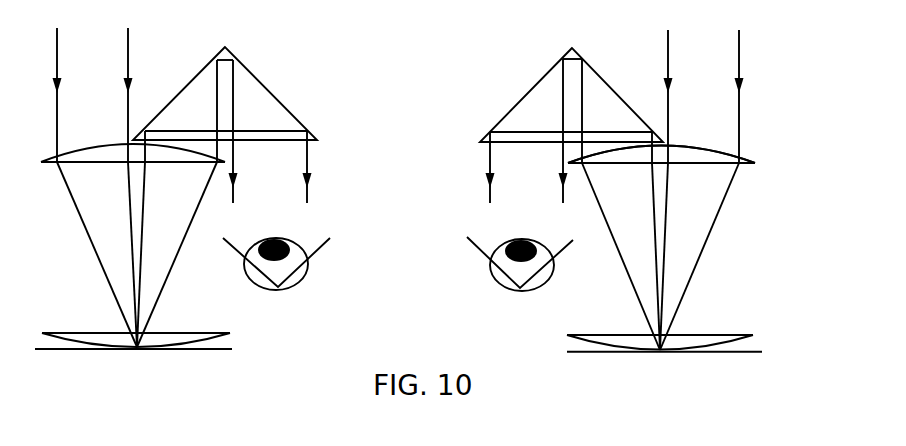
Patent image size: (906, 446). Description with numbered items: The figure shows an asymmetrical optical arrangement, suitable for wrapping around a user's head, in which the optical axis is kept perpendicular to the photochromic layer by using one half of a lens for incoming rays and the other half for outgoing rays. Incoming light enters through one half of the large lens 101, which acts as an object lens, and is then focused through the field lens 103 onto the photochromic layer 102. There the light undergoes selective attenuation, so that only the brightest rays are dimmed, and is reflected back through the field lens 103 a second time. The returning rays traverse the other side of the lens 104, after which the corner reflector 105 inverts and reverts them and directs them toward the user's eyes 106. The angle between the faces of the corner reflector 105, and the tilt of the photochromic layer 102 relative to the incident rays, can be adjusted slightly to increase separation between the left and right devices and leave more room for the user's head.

The large lens 101 is at (694, 147).
The photochromic layer 102 is at (717, 352).
The field lens 103 is at (705, 335).
The other side of the lens 104 is at (620, 150).
The corner reflector 105 is at (541, 81).
The user's eyes 106 is at (552, 280).